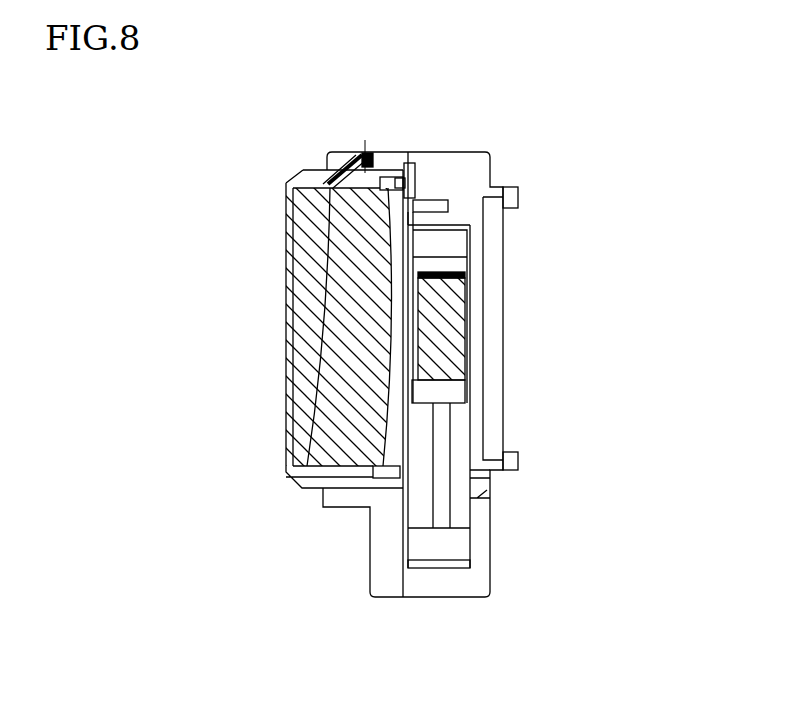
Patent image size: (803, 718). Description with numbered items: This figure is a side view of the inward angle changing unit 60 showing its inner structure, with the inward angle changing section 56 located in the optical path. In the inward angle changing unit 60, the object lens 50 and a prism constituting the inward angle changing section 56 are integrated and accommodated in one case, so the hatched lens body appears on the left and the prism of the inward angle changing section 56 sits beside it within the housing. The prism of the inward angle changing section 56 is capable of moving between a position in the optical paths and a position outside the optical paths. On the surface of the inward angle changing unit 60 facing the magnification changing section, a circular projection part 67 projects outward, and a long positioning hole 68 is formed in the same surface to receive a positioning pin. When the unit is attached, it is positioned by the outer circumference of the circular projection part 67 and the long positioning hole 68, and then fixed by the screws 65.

The object lens 50 is at (318, 322).
The inward angle changing section 56 is at (445, 328).
The inward angle changing unit 60 is at (453, 126).
The screws 65 is at (518, 197).
The circular projection part 67 is at (492, 471).
The long positioning hole 68 is at (481, 492).